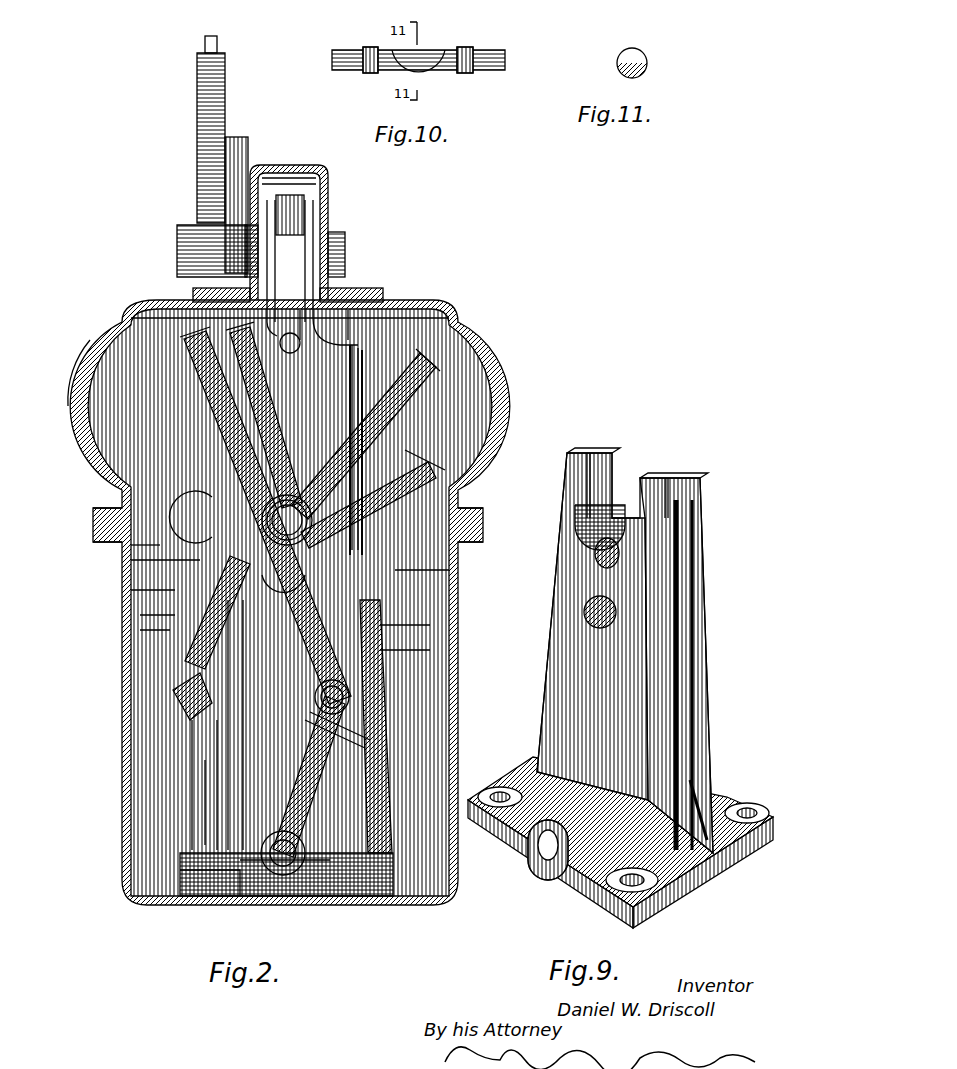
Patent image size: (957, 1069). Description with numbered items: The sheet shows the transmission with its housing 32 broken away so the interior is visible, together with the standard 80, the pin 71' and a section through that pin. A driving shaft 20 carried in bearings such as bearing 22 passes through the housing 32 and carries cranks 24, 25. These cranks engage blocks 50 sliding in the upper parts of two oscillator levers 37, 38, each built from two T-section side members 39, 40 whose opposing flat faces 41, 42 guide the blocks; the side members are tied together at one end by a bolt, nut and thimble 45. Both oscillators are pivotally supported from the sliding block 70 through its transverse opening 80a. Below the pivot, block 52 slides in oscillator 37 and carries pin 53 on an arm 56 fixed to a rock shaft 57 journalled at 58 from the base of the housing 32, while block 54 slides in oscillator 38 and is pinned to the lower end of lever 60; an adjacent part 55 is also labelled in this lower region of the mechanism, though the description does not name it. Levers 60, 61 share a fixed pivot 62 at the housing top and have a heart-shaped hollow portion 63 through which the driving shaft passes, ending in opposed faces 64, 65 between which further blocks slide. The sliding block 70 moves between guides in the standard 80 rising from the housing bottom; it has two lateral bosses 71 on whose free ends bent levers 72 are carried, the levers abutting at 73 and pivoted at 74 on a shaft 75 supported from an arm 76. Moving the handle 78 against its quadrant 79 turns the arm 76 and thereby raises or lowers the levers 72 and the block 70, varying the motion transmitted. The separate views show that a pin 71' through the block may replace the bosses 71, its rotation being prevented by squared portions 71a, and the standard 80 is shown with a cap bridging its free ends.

In FIG. 2, the driving shaft 20 is at (130, 596).
In FIG. 2, the bearing 22 is at (470, 486).
In FIG. 2, the crank 24 is at (128, 542).
In FIG. 2, the crank 25 is at (480, 472).
In FIG. 2, the transmission housing 32 is at (250, 905).
In FIG. 2, the oscillator lever 37 is at (190, 662).
In FIG. 2, the oscillator lever 38 is at (185, 678).
In FIG. 2, the side member 39 is at (225, 466).
In FIG. 2, the side member 40 is at (130, 476).
In FIG. 2, the flat face 41 is at (200, 450).
In FIG. 2, the flat face 42 is at (72, 396).
In FIG. 2, the thimble 45 is at (160, 318).
In FIG. 2, the block 50 is at (180, 492).
In FIG. 2, the block 52 is at (342, 718).
In FIG. 2, the pin 53 is at (352, 698).
In FIG. 2, the block 54 is at (140, 722).
In FIG. 2, the rod 55 is at (130, 702).
In FIG. 2, the arm 56 is at (312, 788).
In FIG. 2, the rock shaft 57 is at (270, 905).
In FIG. 2, the journal 58 is at (298, 880).
In FIG. 9, the journal 58 is at (560, 865).
In FIG. 2, the lever 60 is at (380, 320).
In FIG. 2, the lever 61 is at (320, 375).
In FIG. 2, the fixed pivot 62 is at (195, 290).
In FIG. 2, the heart-shaped central portion 63 is at (175, 506).
In FIG. 2, the opposed face 64 is at (130, 620).
In FIG. 2, the opposed face 65 is at (140, 626).
In FIG. 2, the sliding block 70 is at (160, 742).
In FIG. 9, the sliding block 70 is at (572, 597).
In FIG. 2, the boss 71 is at (281, 570).
In FIG. 10, the squared portion 71a is at (370, 48).
In FIG. 10, the pin 71' is at (428, 62).
In FIG. 11, the pin 71' is at (607, 69).
In FIG. 2, the bent lever 72 is at (325, 288).
In FIG. 2, the abutment 73 is at (312, 256).
In FIG. 2, the pivot 74 is at (296, 173).
In FIG. 2, the shaft 75 is at (328, 196).
In FIG. 2, the arm 76 is at (305, 222).
In FIG. 2, the handle 78 is at (197, 96).
In FIG. 2, the quadrant 79 is at (240, 175).
In FIG. 2, the standard 80 is at (195, 816).
In FIG. 9, the standard 80 is at (690, 840).
In FIG. 9, the transverse opening 80a is at (585, 622).